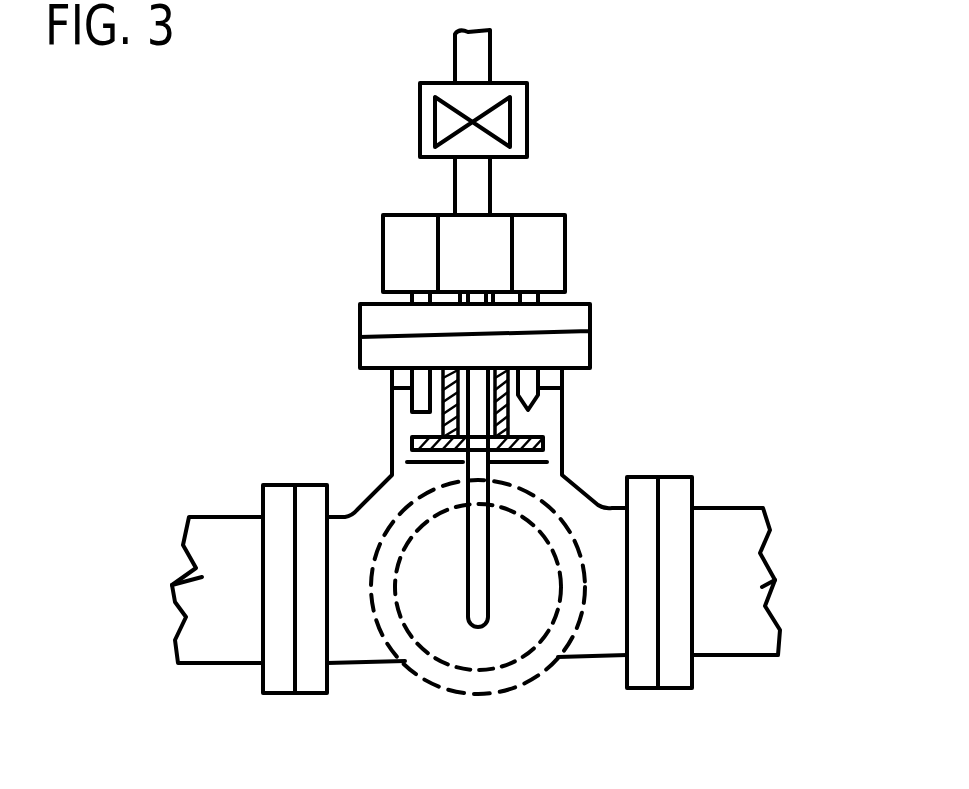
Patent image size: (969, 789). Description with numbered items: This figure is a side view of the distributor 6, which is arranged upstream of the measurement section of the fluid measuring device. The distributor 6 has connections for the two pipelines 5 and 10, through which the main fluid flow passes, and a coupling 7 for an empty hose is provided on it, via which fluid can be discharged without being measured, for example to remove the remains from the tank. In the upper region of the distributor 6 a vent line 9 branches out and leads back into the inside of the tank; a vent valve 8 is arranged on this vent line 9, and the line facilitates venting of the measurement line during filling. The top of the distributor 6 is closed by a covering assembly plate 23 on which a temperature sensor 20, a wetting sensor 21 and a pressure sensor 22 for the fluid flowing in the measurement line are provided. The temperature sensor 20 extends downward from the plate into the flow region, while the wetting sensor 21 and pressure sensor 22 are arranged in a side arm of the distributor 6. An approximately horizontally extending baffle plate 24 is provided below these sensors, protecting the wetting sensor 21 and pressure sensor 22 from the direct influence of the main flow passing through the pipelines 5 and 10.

The pipeline 5 is at (183, 585).
The distributor 6 is at (700, 380).
The coupling 7 is at (533, 660).
The vent valve 8 is at (520, 104).
The vent line 9 is at (478, 185).
The pipeline 10 is at (775, 582).
The temperature sensor 20 is at (477, 617).
The wetting sensor 21 is at (562, 388).
The pressure sensor 22 is at (392, 388).
The covering assembly plate 23 is at (373, 320).
The baffle plate 24 is at (543, 443).